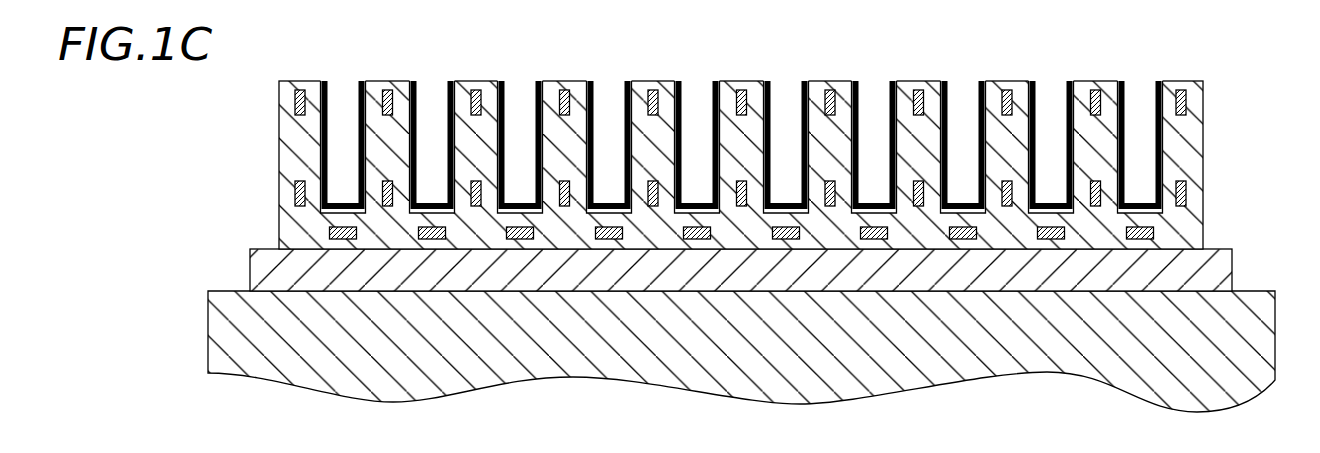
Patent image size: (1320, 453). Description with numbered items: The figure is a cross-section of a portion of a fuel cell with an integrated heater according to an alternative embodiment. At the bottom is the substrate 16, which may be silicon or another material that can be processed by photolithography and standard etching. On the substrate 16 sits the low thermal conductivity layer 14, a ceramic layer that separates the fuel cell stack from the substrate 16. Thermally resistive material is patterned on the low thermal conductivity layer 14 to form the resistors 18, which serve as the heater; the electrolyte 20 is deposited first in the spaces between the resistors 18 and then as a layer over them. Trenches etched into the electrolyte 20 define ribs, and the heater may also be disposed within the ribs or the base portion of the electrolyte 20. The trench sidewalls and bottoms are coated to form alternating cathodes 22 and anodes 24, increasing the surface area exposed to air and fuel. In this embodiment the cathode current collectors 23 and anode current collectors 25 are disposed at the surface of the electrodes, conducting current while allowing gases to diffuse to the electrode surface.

The low thermal conductivity layer 14 is at (1220, 273).
The substrate 16 is at (835, 355).
The resistors 18 is at (740, 206).
The electrolyte 20 is at (1204, 225).
The cathode 22 is at (324, 82).
The cathode current collector 23 is at (329, 119).
The anode 24 is at (412, 82).
The anode current collector 25 is at (418, 117).